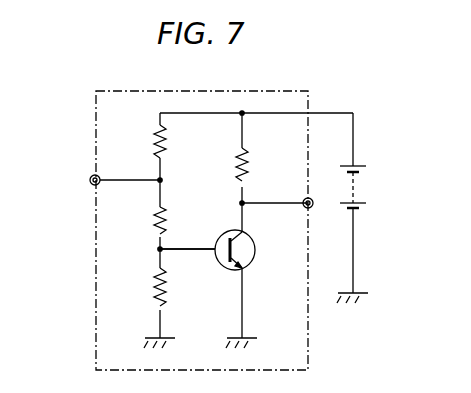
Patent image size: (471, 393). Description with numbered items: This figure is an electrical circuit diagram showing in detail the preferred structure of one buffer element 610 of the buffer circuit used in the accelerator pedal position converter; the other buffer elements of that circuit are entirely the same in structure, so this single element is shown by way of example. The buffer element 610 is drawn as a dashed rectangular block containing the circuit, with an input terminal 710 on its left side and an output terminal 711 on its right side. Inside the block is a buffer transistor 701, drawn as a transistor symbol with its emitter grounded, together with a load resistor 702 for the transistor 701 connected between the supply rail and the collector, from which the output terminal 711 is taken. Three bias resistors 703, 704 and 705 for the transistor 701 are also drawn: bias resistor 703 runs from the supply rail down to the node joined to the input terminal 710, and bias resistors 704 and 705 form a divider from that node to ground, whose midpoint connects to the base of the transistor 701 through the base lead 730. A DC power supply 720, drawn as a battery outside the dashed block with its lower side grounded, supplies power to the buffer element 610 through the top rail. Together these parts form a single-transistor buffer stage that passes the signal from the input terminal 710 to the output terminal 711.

The buffer element 610 is at (235, 88).
The buffer transistor 701 is at (255, 245).
The load resistor 702 is at (238, 162).
The bias resistor 703 is at (158, 140).
The bias resistor 704 is at (158, 229).
The bias resistor 705 is at (158, 291).
The input terminal 710 is at (90, 180).
The output terminal 711 is at (302, 200).
The DC power supply 720 is at (362, 178).
The base lead 730 is at (204, 248).